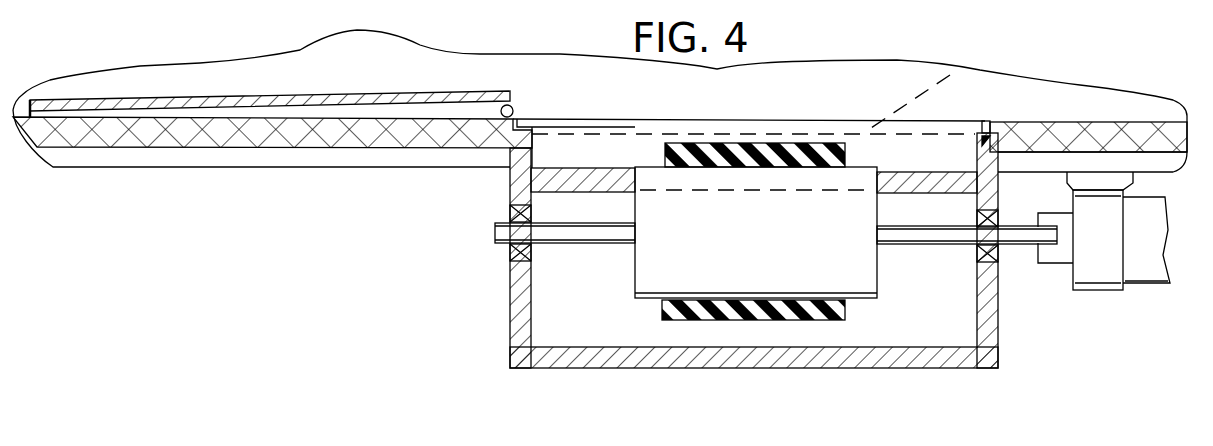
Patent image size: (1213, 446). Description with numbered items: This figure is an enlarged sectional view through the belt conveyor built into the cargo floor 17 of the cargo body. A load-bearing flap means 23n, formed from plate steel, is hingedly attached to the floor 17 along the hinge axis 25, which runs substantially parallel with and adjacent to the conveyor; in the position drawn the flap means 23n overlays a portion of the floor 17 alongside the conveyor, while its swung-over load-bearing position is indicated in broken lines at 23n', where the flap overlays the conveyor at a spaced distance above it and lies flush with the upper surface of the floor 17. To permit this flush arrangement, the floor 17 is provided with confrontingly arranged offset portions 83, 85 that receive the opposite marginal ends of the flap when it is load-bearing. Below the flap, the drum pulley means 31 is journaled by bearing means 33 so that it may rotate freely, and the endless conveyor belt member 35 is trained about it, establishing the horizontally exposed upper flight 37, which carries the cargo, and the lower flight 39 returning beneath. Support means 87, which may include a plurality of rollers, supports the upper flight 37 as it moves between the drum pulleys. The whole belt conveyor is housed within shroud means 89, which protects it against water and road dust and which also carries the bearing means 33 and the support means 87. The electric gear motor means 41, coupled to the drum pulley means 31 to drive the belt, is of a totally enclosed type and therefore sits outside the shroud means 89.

The cargo floor 17 is at (257, 137).
The flap means 23n is at (270, 84).
The flap means in load-bearing position 23n' is at (778, 88).
The hinge axis 25 is at (513, 110).
The drum pulley means 31 is at (752, 252).
The bearing means 33 is at (510, 245).
The endless conveyor belt member 35 is at (764, 359).
The upper flight 37 is at (790, 150).
The lower flight 39 is at (747, 315).
The gear motor means 41 is at (1100, 265).
The offset portion 83 is at (530, 125).
The offset portion 85 is at (983, 130).
The support means 87 is at (603, 177).
The shroud means 89 is at (595, 330).